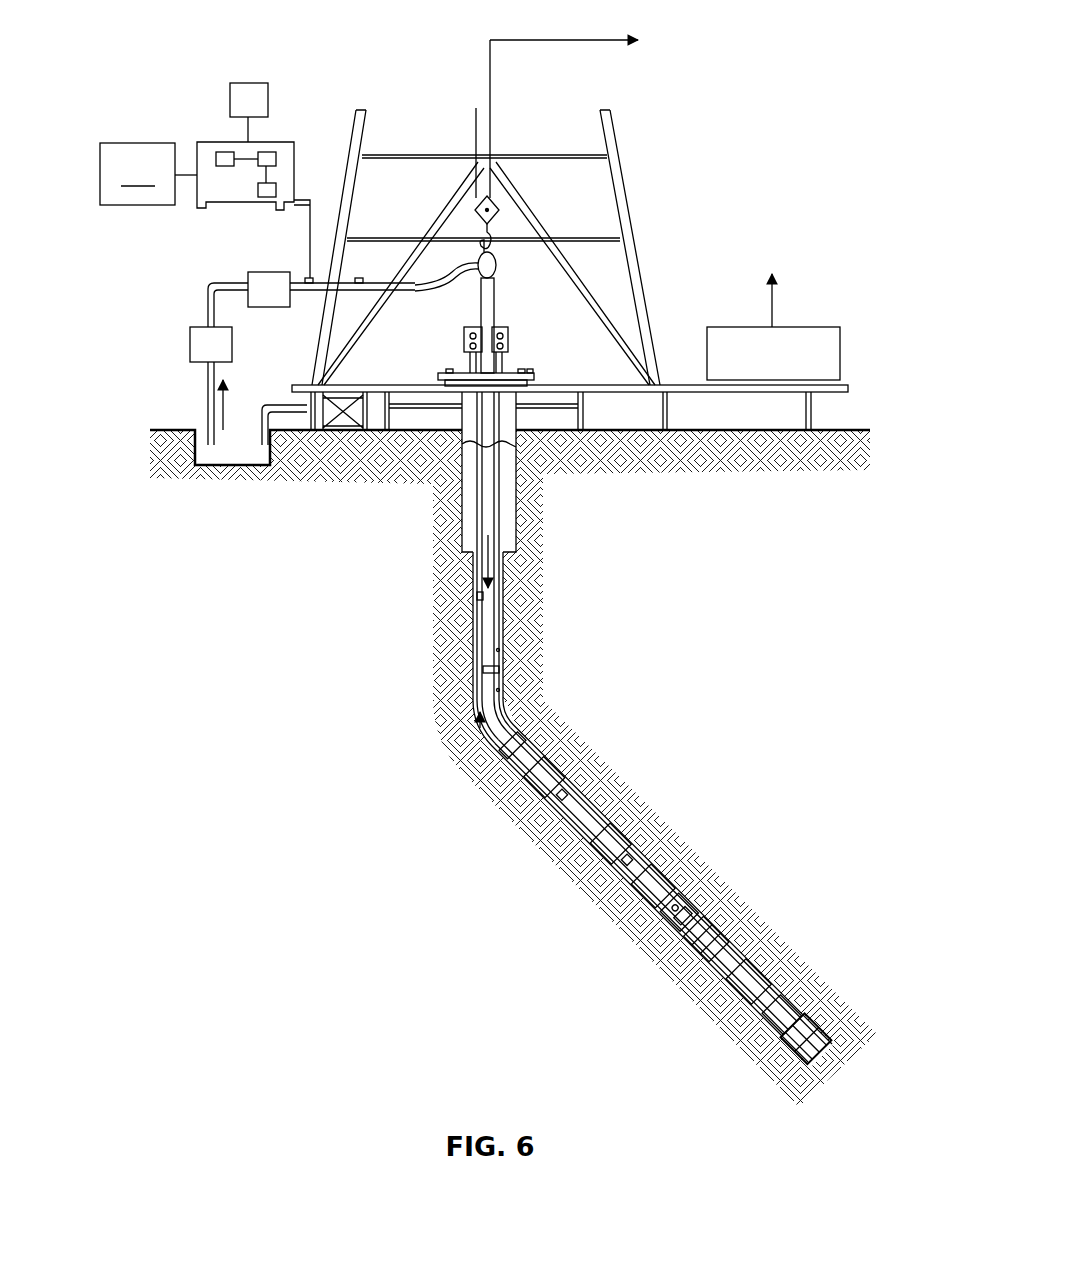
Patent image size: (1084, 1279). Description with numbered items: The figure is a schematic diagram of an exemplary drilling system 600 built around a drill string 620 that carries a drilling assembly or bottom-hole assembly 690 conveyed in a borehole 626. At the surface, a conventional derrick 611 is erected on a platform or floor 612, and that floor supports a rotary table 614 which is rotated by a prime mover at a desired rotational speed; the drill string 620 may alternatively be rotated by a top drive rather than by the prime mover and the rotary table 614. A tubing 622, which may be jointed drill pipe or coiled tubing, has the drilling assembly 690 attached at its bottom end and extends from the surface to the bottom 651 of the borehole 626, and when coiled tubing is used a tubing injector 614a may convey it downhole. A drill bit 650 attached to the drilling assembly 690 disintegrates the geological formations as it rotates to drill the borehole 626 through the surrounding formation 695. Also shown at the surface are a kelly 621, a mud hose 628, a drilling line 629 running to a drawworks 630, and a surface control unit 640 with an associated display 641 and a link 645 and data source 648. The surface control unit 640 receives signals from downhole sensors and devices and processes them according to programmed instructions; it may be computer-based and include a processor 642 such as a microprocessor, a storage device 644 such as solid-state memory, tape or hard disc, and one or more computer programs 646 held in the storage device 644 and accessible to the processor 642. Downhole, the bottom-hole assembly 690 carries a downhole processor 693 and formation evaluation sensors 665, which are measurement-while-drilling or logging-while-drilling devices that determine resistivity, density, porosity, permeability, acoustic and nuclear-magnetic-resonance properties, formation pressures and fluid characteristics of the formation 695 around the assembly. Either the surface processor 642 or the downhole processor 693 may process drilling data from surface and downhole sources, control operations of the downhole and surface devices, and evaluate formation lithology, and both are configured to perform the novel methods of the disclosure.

The drilling system 600 is at (420, 55).
The derrick 611 is at (635, 250).
The platform or floor 612 is at (650, 380).
The rotary table 614 is at (514, 386).
The tubing injector 614a is at (510, 340).
The drill string 620 is at (658, 771).
The kelly 621 is at (497, 315).
The tubing 622 is at (477, 626).
The borehole 626 is at (508, 722).
The mud hose 628 is at (480, 272).
The drilling line 629 is at (493, 122).
The drawworks 630 is at (808, 327).
The surface control unit 640 is at (226, 142).
The display 641 is at (248, 82).
The processor 642 is at (222, 152).
The storage device 644 is at (268, 152).
The communication link 645 is at (298, 200).
The computer programs 646 is at (264, 197).
The data source 648 is at (148, 174).
The drill bit 650 is at (812, 1020).
The bottom of the borehole 651 is at (797, 1072).
The formation evaluation sensors 665 is at (670, 937).
The drilling assembly or bottom-hole assembly 690 is at (697, 796).
The downhole processor 693 is at (644, 888).
The formation 695 is at (803, 869).